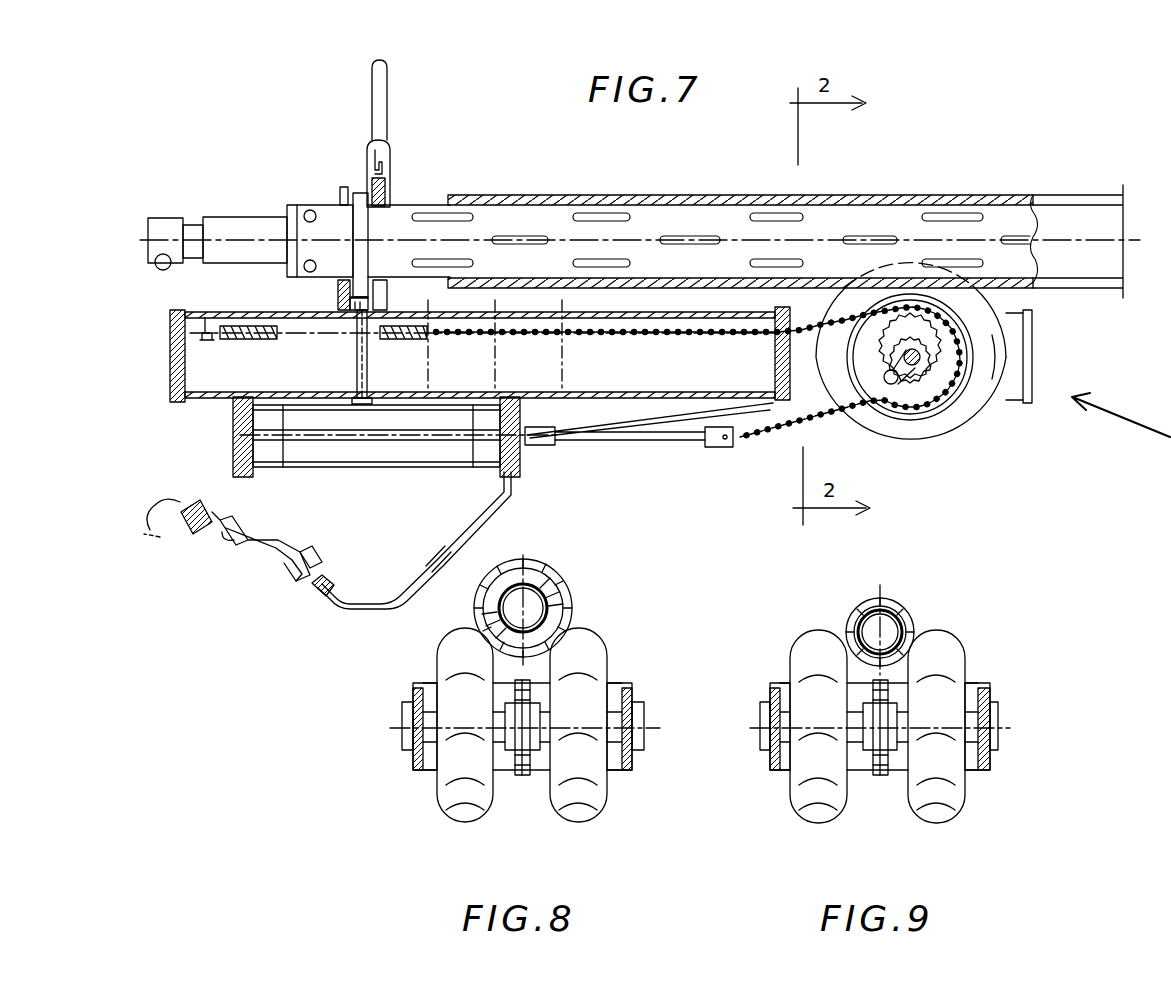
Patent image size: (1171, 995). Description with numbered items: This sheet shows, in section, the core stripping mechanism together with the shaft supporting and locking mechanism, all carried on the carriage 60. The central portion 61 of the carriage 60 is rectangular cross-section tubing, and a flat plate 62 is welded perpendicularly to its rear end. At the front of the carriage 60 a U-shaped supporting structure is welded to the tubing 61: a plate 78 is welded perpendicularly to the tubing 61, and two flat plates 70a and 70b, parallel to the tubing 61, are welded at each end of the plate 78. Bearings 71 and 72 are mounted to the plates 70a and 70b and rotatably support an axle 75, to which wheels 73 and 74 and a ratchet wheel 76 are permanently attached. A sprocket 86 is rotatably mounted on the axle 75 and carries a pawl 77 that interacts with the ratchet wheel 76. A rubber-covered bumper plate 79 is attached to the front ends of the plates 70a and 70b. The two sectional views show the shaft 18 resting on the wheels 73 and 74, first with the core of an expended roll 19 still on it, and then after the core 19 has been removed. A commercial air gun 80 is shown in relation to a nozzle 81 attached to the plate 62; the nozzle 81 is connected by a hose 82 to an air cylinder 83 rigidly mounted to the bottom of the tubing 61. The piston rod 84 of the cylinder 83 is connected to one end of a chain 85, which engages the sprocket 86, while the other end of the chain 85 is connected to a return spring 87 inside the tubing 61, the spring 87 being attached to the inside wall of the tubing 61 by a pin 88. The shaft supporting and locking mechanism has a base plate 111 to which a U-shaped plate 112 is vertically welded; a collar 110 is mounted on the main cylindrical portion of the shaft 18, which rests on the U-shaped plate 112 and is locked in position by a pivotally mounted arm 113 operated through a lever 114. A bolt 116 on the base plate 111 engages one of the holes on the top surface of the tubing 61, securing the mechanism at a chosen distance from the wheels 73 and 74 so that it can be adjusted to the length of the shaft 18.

In FIG. 7, the shaft 18 is at (267, 230).
In FIG. 8, the shaft 18 is at (568, 598).
In FIG. 9, the shaft 18 is at (908, 604).
In FIG. 7, the core of an expended roll 19 is at (713, 197).
In FIG. 8, the core of an expended roll 19 is at (553, 574).
In FIG. 7, the carriage 60 is at (1121, 415).
In FIG. 7, the central portion / rectangular cross-section tubing 61 is at (595, 392).
In FIG. 7, the flat plate 62 is at (168, 353).
In FIG. 8, the flat plate 70a is at (420, 762).
In FIG. 9, the flat plate 70a is at (775, 767).
In FIG. 7, the flat plate 70b is at (1005, 390).
In FIG. 8, the flat plate 70b is at (625, 765).
In FIG. 9, the flat plate 70b is at (987, 765).
In FIG. 8, the bearing 71 is at (402, 725).
In FIG. 9, the bearing 71 is at (767, 732).
In FIG. 8, the bearing 72 is at (640, 722).
In FIG. 9, the bearing 72 is at (995, 735).
In FIG. 8, the wheel 73 is at (440, 662).
In FIG. 9, the wheel 73 is at (798, 658).
In FIG. 8, the wheel 74 is at (593, 660).
In FIG. 9, the wheel 74 is at (956, 658).
In FIG. 7, the axle 75 is at (940, 382).
In FIG. 7, the ratchet wheel 76 is at (895, 387).
In FIG. 7, the pawl 77 is at (870, 382).
In FIG. 7, the plate 78 is at (783, 425).
In FIG. 7, the bumper plate 79 is at (1028, 328).
In FIG. 7, the air gun 80 is at (240, 555).
In FIG. 7, the nozzle 81 is at (318, 596).
In FIG. 7, the hose 82 is at (403, 593).
In FIG. 7, the air cylinder 83 is at (385, 467).
In FIG. 7, the piston rod 84 is at (685, 443).
In FIG. 7, the chain 85 is at (668, 334).
In FIG. 7, the sprocket 86 is at (870, 350).
In FIG. 7, the return spring 87 is at (414, 340).
In FIG. 7, the pin 88 is at (207, 340).
In FIG. 7, the collar 110 is at (360, 200).
In FIG. 7, the base plate 111 is at (337, 310).
In FIG. 7, the U-shaped plate 112 is at (341, 197).
In FIG. 7, the arm 113 is at (387, 185).
In FIG. 7, the lever 114 is at (378, 90).
In FIG. 7, the bolt 116 is at (358, 338).